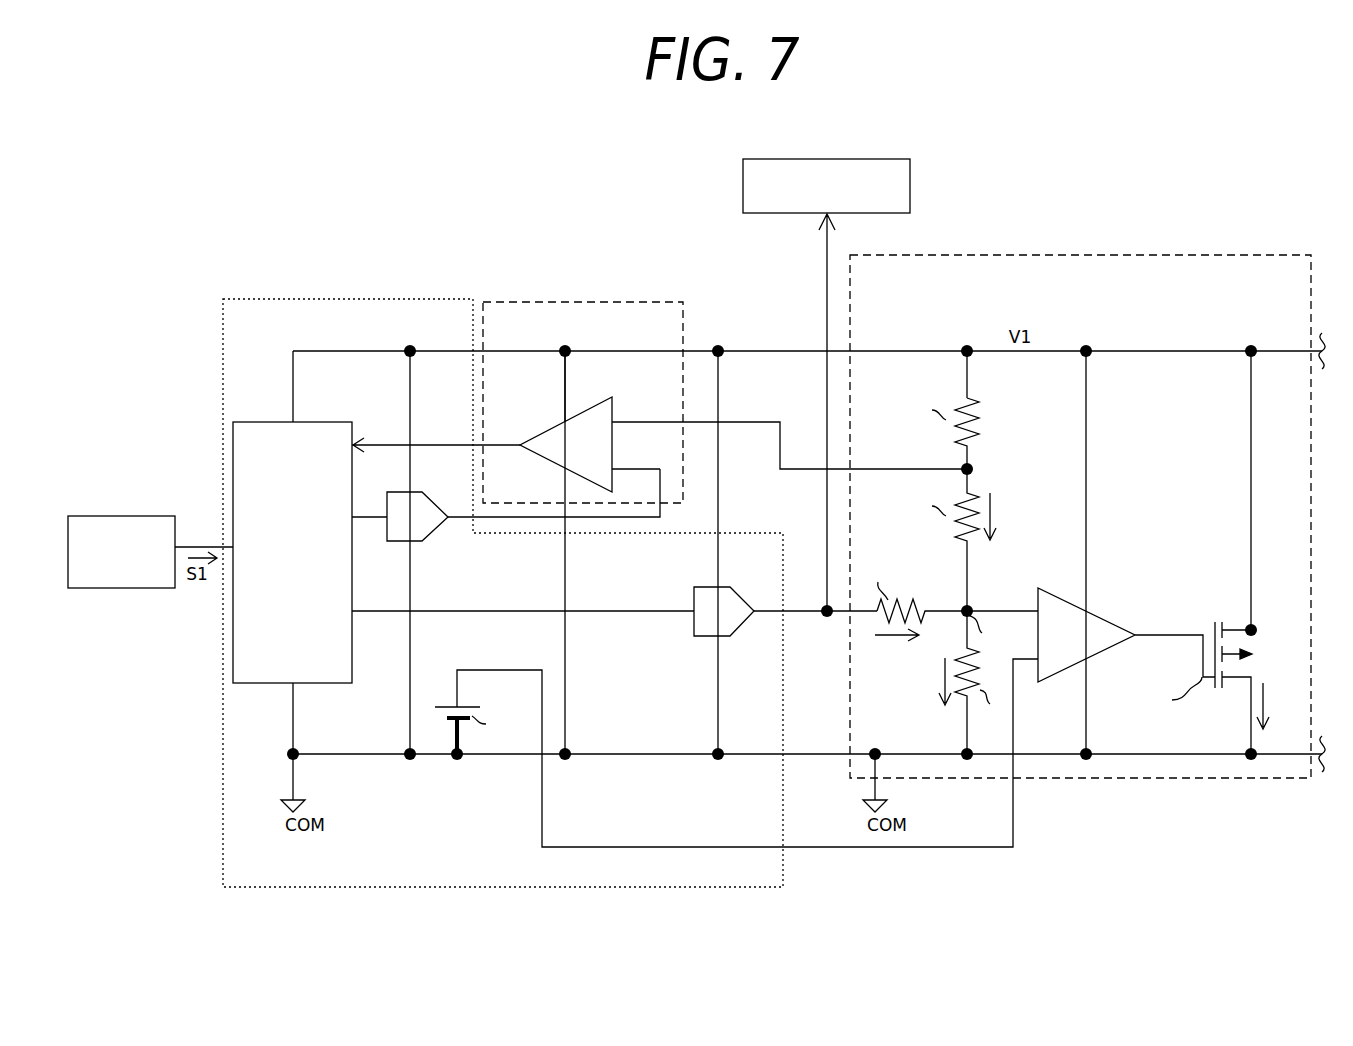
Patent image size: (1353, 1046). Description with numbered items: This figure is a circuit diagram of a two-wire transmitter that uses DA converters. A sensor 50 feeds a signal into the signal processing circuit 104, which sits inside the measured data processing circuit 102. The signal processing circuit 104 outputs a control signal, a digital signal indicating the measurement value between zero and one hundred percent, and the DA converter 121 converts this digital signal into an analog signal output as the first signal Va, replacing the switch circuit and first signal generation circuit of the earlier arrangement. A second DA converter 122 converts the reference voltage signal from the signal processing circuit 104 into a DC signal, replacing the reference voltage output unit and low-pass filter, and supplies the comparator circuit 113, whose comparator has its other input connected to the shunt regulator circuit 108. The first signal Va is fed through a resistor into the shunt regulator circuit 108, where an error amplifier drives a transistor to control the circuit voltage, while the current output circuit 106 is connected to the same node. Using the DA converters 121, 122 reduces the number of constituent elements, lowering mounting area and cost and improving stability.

The sensor 50 is at (128, 516).
The measured data processing circuit 102 is at (348, 299).
The signal processing circuit 104 is at (270, 422).
The current output circuit 106 is at (743, 184).
The shunt regulator circuit 108 is at (948, 252).
The comparator circuit 113 is at (611, 299).
The DA converter 121 is at (738, 599).
The DA converter 122 is at (440, 533).